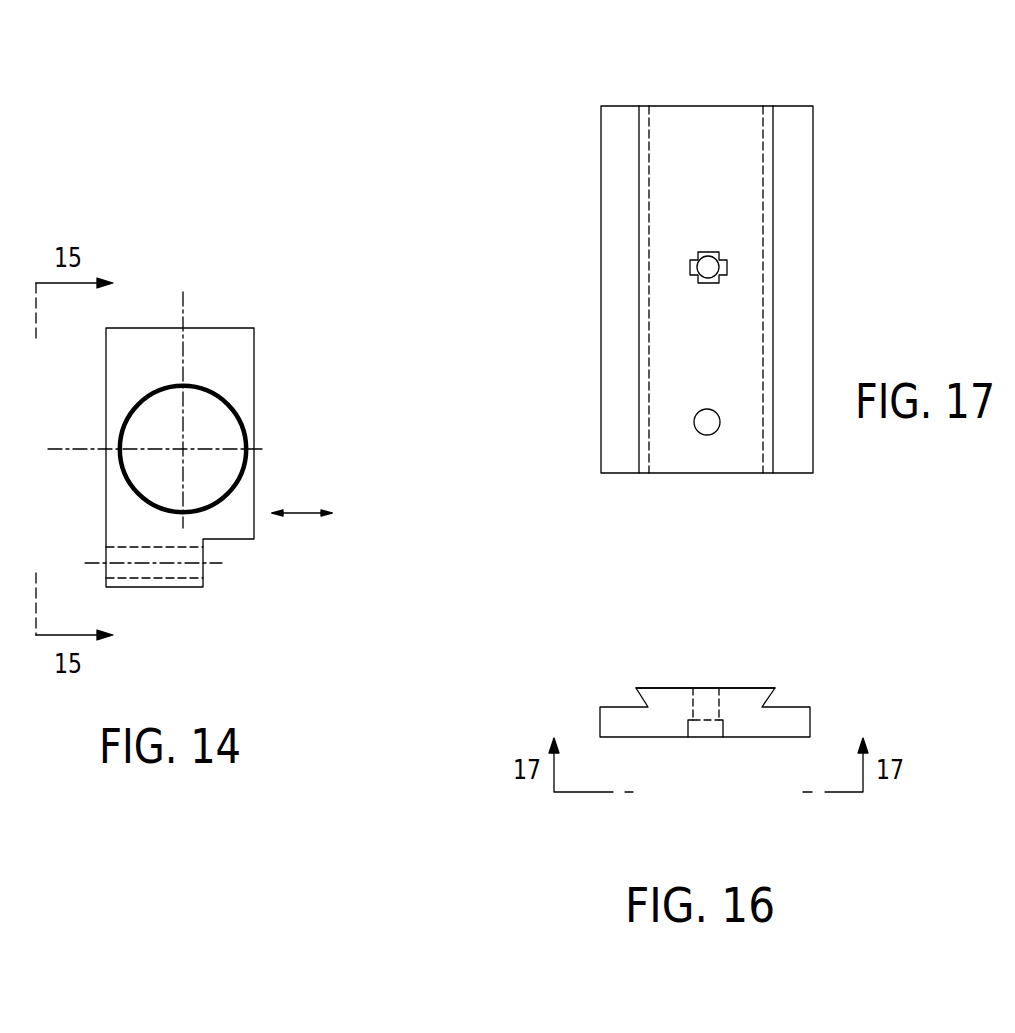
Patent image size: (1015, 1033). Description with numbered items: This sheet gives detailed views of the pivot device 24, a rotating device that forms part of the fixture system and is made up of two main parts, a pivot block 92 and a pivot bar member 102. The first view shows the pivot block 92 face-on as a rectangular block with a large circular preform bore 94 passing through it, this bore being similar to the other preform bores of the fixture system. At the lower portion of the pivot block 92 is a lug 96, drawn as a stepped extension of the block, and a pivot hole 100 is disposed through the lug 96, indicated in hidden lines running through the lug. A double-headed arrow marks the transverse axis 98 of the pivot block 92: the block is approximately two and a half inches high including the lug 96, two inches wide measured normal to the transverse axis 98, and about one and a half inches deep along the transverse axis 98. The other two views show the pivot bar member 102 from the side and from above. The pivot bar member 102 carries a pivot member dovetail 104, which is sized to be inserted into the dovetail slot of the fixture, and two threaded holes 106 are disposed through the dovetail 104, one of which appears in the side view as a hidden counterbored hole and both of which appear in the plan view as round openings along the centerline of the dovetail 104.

In FIG. 14, the pivot device 24 is at (227, 442).
In FIG. 14, the pivot block 92 is at (222, 358).
In FIG. 14, the preform bore 94 is at (209, 446).
In FIG. 14, the lug 96 is at (136, 544).
In FIG. 14, the transverse axis 98 is at (323, 513).
In FIG. 14, the pivot hole 100 is at (176, 578).
In FIG. 17, the pivot bar member 102 is at (732, 386).
In FIG. 16, the pivot bar member 102 is at (748, 712).
In FIG. 17, the pivot member dovetail 104 is at (697, 140).
In FIG. 16, the pivot member dovetail 104 is at (647, 703).
In FIG. 17, the threaded holes 106 is at (725, 253).
In FIG. 16, the threaded holes 106 is at (708, 684).